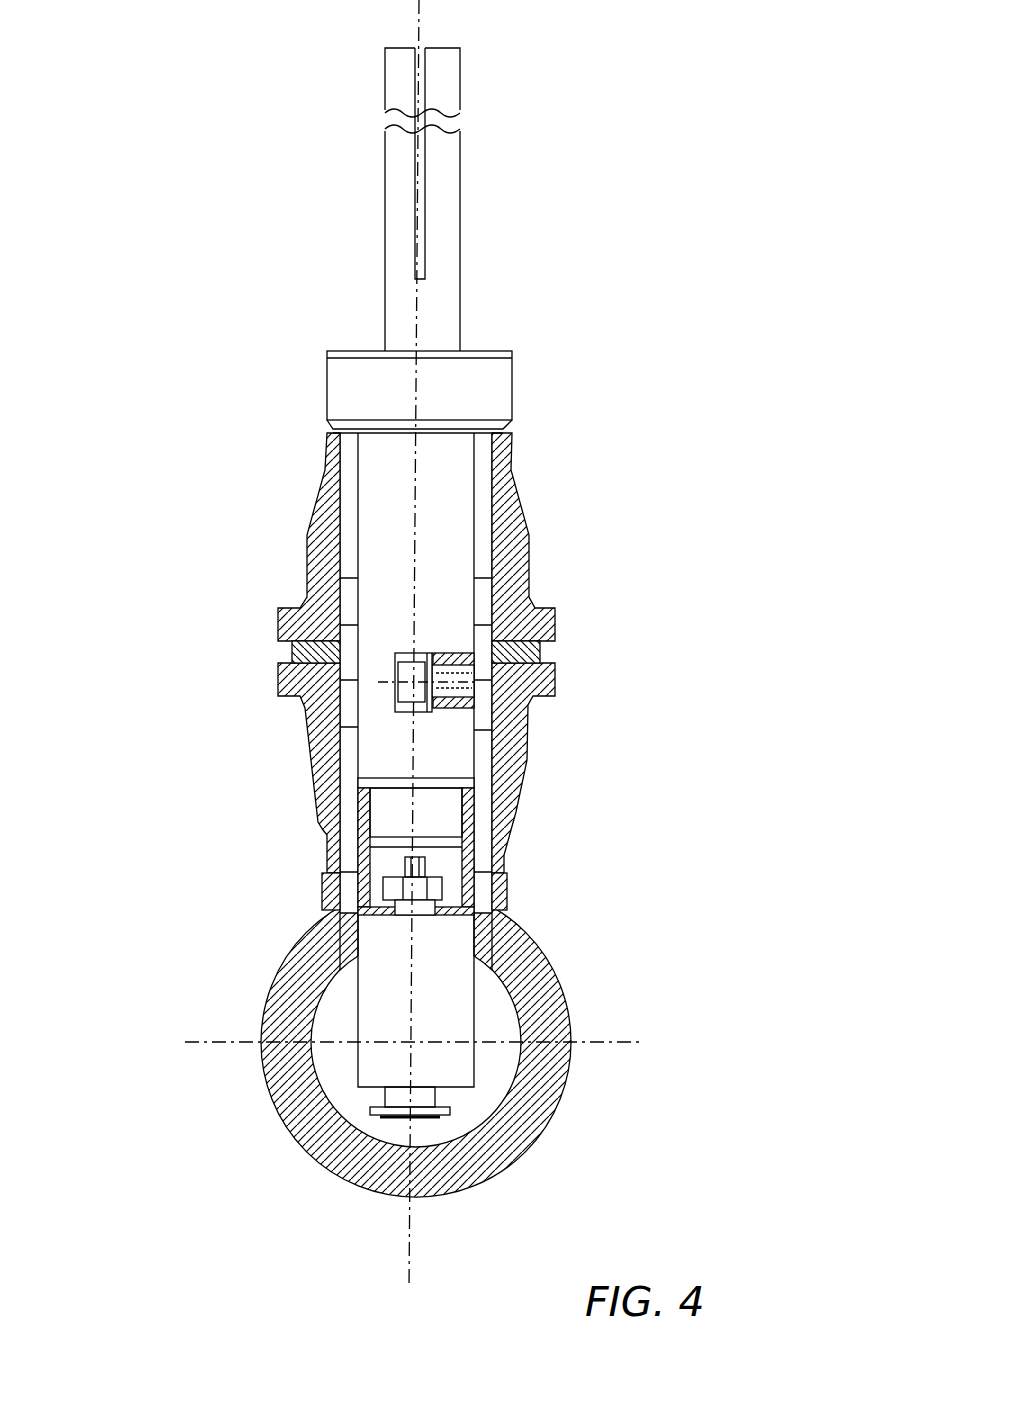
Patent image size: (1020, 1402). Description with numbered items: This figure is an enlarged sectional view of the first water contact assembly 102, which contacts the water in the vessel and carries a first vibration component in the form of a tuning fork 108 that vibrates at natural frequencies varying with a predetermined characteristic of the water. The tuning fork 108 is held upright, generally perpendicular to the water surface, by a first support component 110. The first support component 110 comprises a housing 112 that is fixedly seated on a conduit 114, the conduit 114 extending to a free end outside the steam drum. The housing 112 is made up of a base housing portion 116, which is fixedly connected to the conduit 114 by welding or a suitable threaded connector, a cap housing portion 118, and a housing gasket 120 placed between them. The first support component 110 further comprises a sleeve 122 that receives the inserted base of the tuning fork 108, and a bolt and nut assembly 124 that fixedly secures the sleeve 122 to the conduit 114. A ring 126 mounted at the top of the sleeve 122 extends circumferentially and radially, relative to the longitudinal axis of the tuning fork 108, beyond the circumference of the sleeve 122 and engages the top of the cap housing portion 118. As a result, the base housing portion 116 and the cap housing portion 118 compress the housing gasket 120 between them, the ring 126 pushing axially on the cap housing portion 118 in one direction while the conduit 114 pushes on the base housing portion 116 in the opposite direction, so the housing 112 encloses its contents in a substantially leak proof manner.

The first water contact assembly 102 is at (262, 405).
The tuning fork 108 is at (472, 215).
The first support component 110 is at (285, 747).
The housing 112 is at (542, 520).
The conduit 114 is at (540, 950).
The base housing portion 116 is at (515, 789).
The cap housing portion 118 is at (529, 578).
The housing gasket 120 is at (546, 652).
The sleeve 122 is at (342, 849).
The bolt and nut assembly 124 is at (472, 708).
The ring 126 is at (495, 390).